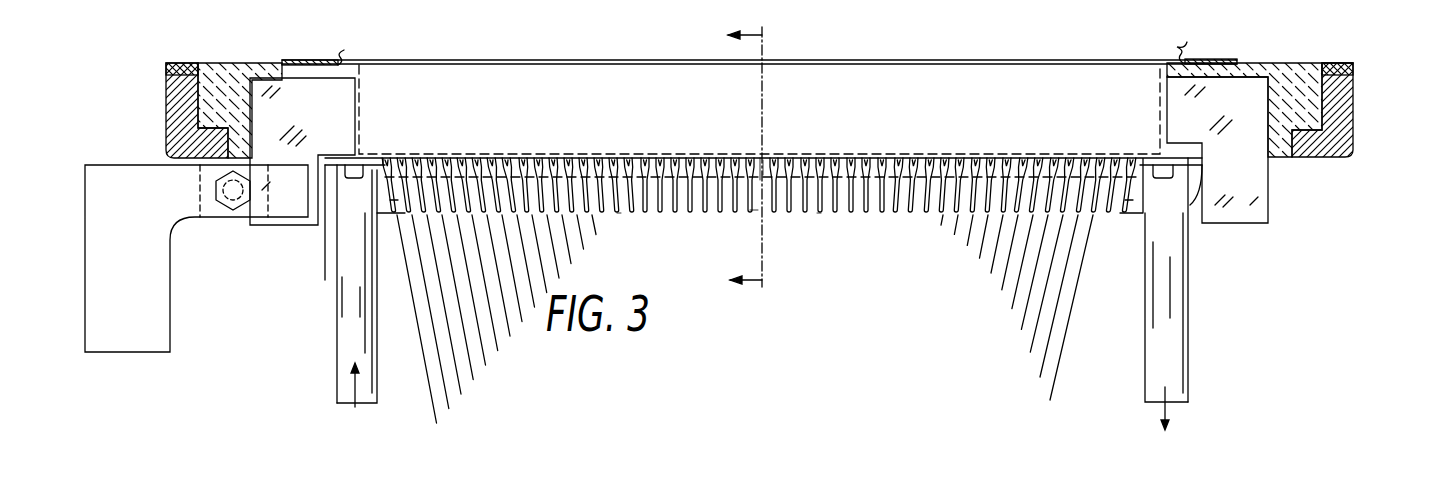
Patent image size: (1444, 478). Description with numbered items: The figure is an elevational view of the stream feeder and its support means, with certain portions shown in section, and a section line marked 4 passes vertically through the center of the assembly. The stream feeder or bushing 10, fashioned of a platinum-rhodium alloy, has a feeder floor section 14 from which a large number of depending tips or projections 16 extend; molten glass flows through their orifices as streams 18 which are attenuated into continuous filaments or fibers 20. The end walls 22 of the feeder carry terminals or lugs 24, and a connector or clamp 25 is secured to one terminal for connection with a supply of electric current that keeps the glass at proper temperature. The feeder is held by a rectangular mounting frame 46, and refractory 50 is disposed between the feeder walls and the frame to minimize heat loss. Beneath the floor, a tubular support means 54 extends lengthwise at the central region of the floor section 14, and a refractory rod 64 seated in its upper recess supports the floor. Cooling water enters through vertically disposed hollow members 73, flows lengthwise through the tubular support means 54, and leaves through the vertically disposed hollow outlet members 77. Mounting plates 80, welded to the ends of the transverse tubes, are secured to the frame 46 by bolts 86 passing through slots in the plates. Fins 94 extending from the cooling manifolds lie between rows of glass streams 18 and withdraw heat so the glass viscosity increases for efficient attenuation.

The section line 4- 4 is at (728, 162).
The stream feeder or bushing 10 is at (900, 62).
The feeder floor section 14 is at (645, 152).
The depending tips or projections 16 is at (527, 163).
The streams of glass 18 is at (755, 177).
The filaments or fibers 20 is at (467, 353).
The end walls 22 is at (360, 113).
The terminals or lugs 24 is at (268, 220).
The connectors or clamps 25 is at (108, 352).
The mounting frame 46 is at (166, 118).
The refractory 50 is at (1300, 72).
The tubular support means 54 is at (750, 218).
The rod 64 is at (762, 163).
The vertically disposed hollow members 73 is at (337, 392).
The vertically disposed hollow members 77 is at (1190, 327).
The mounting plates 80 is at (330, 165).
The securing bolts 86 is at (353, 178).
The fins 94 is at (670, 215).